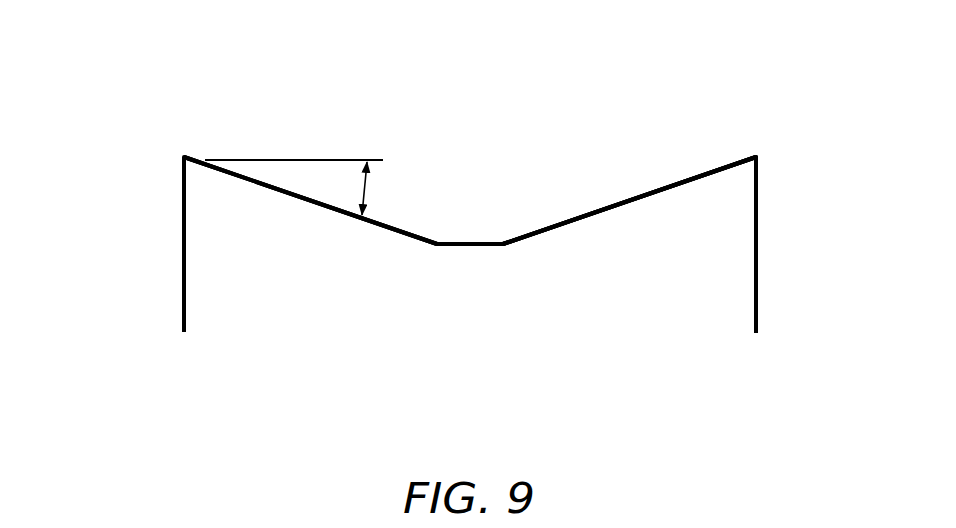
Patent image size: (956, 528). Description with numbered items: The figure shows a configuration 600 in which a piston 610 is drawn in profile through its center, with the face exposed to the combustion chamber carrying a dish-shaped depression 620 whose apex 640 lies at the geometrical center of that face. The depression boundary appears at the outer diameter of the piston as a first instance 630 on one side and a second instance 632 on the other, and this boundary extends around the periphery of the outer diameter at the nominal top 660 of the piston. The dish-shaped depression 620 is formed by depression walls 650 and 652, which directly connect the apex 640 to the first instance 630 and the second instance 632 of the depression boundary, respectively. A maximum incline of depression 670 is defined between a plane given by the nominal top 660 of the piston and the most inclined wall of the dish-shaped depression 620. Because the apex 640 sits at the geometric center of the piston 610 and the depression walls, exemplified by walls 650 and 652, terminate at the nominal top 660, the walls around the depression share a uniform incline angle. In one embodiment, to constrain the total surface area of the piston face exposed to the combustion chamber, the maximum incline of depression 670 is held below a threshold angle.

The configuration 600 is at (142, 142).
The piston 610 is at (649, 293).
The dish-shaped depression 620 is at (506, 191).
The first instance of depression boundary 630 is at (185, 148).
The second instance of depression boundary 632 is at (757, 148).
The apex 640 is at (473, 248).
The depression wall 650 is at (336, 213).
The depression wall 652 is at (605, 214).
The nominal top of the piston 660 is at (308, 158).
The maximum incline of depression 670 is at (370, 190).